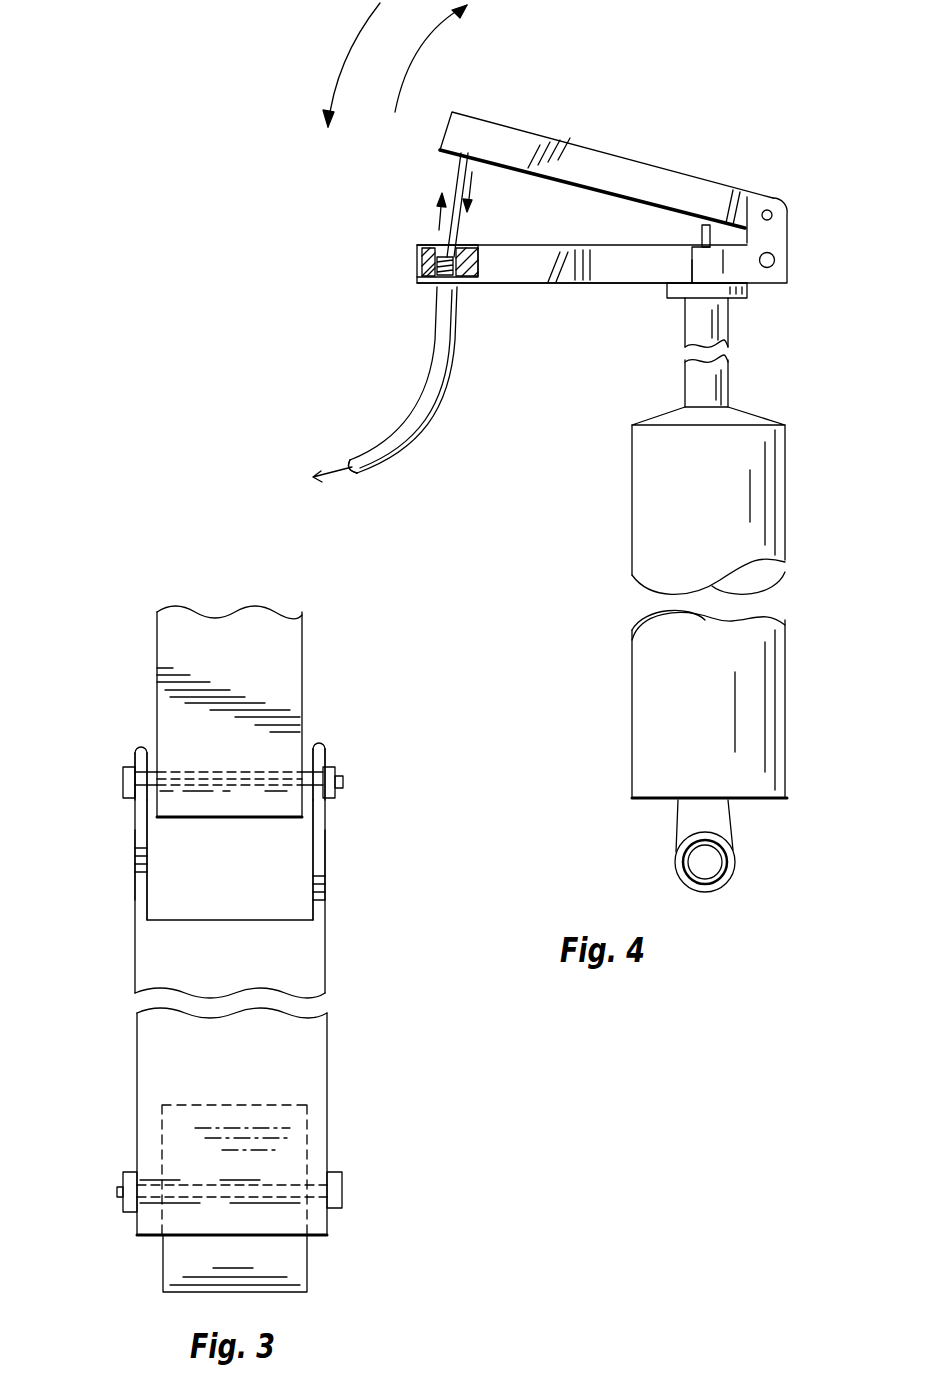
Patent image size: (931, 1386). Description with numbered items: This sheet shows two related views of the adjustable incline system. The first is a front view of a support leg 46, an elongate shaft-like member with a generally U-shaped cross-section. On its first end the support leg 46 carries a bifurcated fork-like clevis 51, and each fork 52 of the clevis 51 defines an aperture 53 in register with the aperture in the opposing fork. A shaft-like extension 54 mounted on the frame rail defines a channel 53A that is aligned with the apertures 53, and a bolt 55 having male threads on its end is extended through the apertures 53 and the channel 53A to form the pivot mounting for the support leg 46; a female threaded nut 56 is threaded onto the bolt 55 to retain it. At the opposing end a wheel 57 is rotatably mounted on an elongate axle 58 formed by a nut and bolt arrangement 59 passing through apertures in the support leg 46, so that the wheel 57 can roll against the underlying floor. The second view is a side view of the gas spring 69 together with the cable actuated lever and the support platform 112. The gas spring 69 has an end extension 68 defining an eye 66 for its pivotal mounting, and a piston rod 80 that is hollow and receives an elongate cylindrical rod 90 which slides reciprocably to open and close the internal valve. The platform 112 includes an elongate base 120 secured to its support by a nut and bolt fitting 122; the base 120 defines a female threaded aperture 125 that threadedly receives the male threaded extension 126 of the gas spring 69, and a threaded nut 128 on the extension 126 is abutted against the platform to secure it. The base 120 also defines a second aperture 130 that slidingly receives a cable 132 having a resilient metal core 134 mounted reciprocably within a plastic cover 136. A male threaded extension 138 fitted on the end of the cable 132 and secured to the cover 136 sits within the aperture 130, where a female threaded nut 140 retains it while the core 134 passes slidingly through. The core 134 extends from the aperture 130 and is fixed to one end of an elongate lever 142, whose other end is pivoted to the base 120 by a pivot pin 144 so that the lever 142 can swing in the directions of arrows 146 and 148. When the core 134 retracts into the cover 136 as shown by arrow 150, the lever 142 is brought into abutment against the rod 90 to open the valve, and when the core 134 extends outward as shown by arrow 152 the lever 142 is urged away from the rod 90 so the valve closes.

In FIG. 3, the support leg 46 is at (271, 974).
In FIG. 3, the clevis 51 is at (205, 922).
In FIG. 3, the fork 52 is at (137, 838).
In FIG. 3, the aperture 53 is at (135, 765).
In FIG. 3, the channel 53A is at (249, 790).
In FIG. 3, the extension 54 is at (247, 670).
In FIG. 3, the bolt 55 is at (123, 790).
In FIG. 3, the nut 56 is at (333, 797).
In FIG. 3, the wheel 57 is at (220, 1118).
In FIG. 3, the axle 58 is at (213, 1192).
In FIG. 3, the nut and bolt arrangement 59 is at (117, 1193).
In FIG. 4, the eye 66 is at (703, 860).
In FIG. 4, the end extension 68 is at (735, 842).
In FIG. 4, the gas spring 69 is at (740, 725).
In FIG. 4, the rod 80 is at (727, 325).
In FIG. 4, the rod 90 is at (713, 227).
In FIG. 4, the platform 112 is at (537, 273).
In FIG. 4, the base 120 is at (613, 272).
In FIG. 4, the nut and bolt fitting 122 is at (778, 262).
In FIG. 4, the aperture 125 is at (685, 262).
In FIG. 4, the extension 126 is at (690, 270).
In FIG. 4, the nut 128 is at (747, 292).
In FIG. 4, the aperture 130 is at (433, 248).
In FIG. 4, the cable 132 is at (417, 405).
In FIG. 4, the core 134 is at (447, 178).
In FIG. 4, the cover 136 is at (390, 462).
In FIG. 4, the extension 138 is at (443, 290).
In FIG. 4, the nut 140 is at (488, 247).
In FIG. 4, the lever 142 is at (598, 167).
In FIG. 4, the pivot pin 144 is at (772, 215).
In FIG. 4, the arrow 146 is at (420, 52).
In FIG. 4, the arrow 148 is at (337, 58).
In FIG. 4, the arrow 150 is at (483, 181).
In FIG. 4, the arrow 152 is at (437, 213).